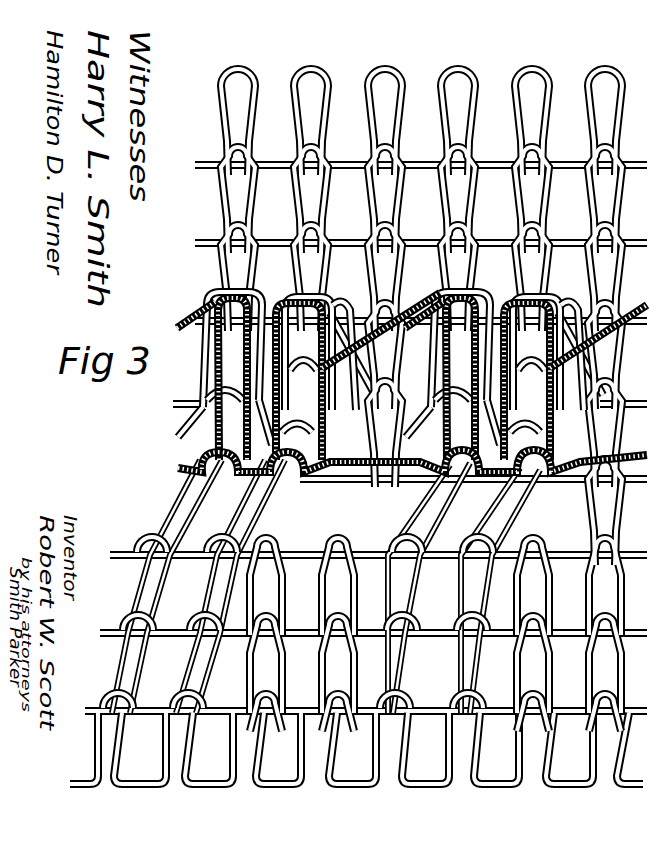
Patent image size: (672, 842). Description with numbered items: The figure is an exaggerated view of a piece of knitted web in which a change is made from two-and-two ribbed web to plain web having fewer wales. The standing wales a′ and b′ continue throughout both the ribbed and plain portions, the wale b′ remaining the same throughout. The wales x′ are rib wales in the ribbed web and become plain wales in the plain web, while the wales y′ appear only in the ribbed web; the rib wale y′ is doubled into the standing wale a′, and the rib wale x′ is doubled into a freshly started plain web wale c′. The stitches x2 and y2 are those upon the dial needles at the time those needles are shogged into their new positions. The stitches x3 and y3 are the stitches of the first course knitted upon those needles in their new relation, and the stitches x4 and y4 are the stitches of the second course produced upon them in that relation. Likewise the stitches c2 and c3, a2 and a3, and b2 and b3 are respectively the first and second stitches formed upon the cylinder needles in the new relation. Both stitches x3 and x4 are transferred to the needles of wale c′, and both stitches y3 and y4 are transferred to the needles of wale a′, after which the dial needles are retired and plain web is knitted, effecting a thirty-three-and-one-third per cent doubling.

The freshly started plain web wale c′ is at (348, 184).
The standing wale a′ is at (392, 427).
The standing wale b′ is at (466, 427).
The rib wale x′ is at (258, 676).
The rib wale y′ is at (325, 676).
The stitches upon the needles x x2 is at (175, 484).
The stitches upon the needles y y2 is at (242, 498).
The first-course stitches on needles x x3 is at (204, 441).
The first-course stitches on needles y y3 is at (314, 424).
The second-course stitches on needles x x4 is at (213, 288).
The second-course stitches on needles y y4 is at (328, 300).
The second stitch formed upon needles c c3 is at (206, 350).
The first stitch formed upon needles c c2 is at (210, 390).
The second stitch formed upon needles a a3 is at (345, 308).
The first stitch formed upon needles a a2 is at (323, 403).
The second stitch formed upon needles b b3 is at (630, 361).
The first stitch formed upon needles b b2 is at (630, 431).